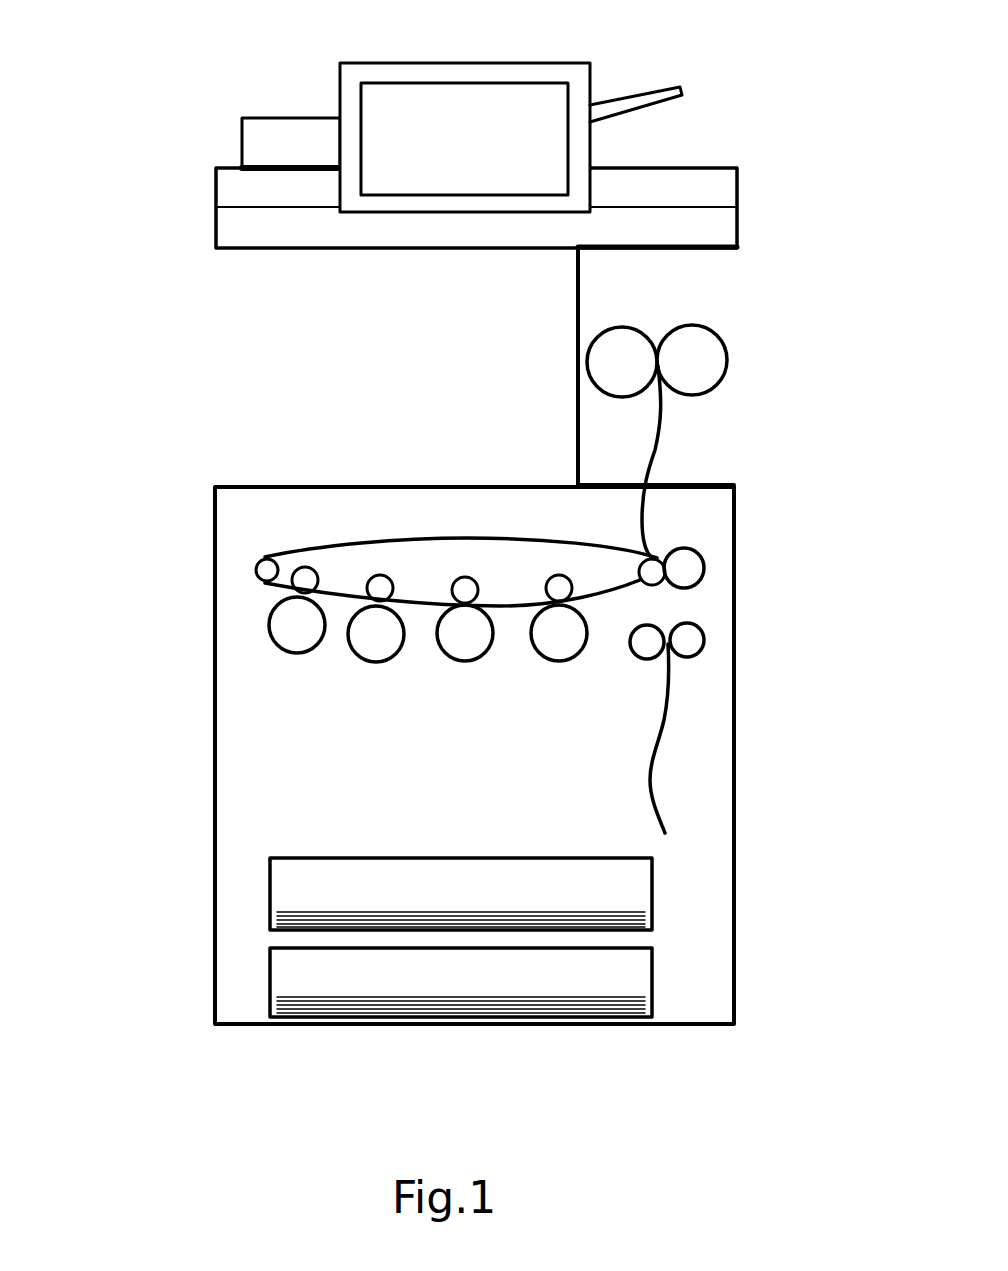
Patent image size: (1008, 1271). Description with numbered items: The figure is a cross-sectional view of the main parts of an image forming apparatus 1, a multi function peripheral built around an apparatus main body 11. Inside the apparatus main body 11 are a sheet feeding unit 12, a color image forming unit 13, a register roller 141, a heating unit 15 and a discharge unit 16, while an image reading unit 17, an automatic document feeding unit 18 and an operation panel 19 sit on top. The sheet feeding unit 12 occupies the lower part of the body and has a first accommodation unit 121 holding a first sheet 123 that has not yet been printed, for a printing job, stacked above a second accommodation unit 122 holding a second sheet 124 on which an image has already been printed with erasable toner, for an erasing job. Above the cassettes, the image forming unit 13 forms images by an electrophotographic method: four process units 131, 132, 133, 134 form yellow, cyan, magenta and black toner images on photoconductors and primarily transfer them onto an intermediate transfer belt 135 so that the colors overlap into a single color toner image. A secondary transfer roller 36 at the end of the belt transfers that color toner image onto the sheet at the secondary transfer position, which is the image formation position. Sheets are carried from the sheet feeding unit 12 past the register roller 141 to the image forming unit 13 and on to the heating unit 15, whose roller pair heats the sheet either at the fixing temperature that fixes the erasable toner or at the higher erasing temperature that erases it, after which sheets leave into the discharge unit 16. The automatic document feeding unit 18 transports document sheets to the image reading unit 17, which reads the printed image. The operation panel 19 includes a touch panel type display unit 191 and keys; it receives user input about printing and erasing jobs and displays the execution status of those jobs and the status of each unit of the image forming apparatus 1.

The image forming apparatus 1 is at (750, 1086).
The apparatus main body 11 is at (735, 950).
The sheet feeding unit 12 is at (672, 915).
The color image forming unit 13 is at (437, 514).
The heating unit 15 is at (725, 357).
The discharge unit 16 is at (282, 486).
The image reading unit 17 is at (216, 188).
The automatic document feeding unit 18 is at (242, 128).
The operation panel 19 is at (357, 63).
The touch panel type display unit 191 is at (360, 117).
The secondary transfer roller 36 is at (710, 562).
The first accommodation unit 121 is at (268, 873).
The second accommodation unit 122 is at (268, 978).
The first sheet 123 is at (283, 912).
The second sheet 124 is at (282, 997).
The process unit 131 is at (268, 624).
The process unit 132 is at (352, 655).
The process unit 133 is at (487, 655).
The process unit 134 is at (580, 653).
The intermediate transfer belt 135 is at (273, 558).
The register roller 141 is at (710, 645).